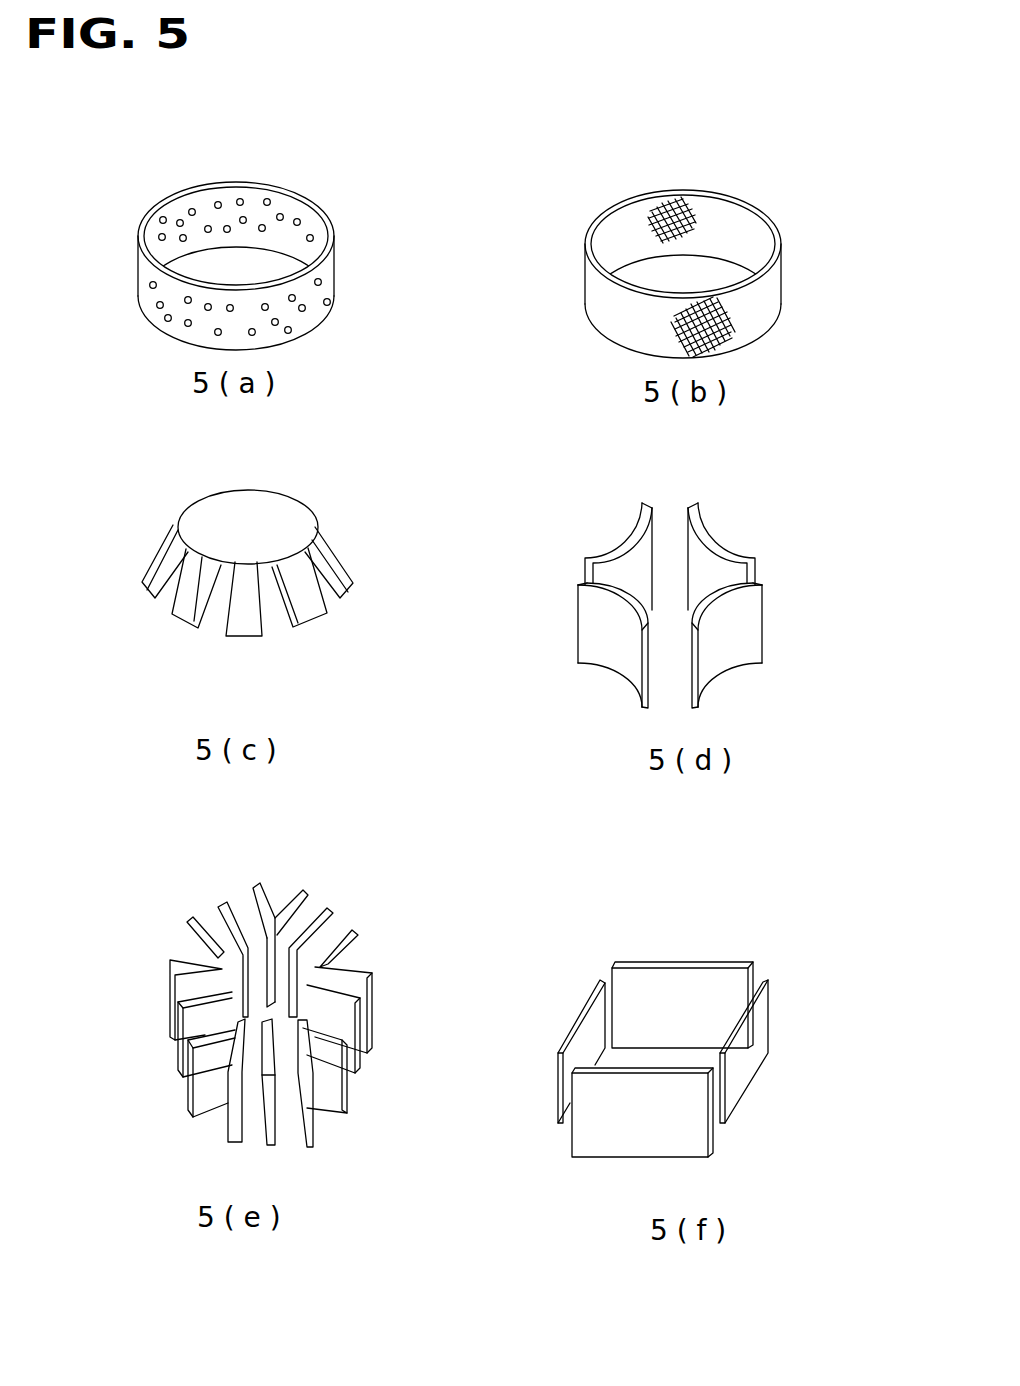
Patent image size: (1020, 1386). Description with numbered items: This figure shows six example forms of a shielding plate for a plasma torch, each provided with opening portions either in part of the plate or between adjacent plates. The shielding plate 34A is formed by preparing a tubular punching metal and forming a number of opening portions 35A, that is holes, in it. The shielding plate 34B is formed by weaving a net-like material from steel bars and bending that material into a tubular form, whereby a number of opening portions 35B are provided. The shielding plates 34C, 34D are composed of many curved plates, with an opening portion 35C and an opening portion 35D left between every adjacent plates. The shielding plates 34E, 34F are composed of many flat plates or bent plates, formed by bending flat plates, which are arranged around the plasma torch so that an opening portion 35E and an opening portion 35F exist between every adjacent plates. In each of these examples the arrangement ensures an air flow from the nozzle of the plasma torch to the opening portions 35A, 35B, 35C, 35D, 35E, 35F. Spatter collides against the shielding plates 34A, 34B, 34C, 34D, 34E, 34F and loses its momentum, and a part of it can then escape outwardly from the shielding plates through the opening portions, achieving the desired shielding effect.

The shielding plate 34A is at (281, 271).
The opening portions 35A is at (290, 330).
The shielding plate 34B is at (724, 295).
The opening portions 35B is at (725, 340).
The shielding plate 34C is at (281, 590).
The opening portion 35C is at (282, 625).
The shielding plate 34D is at (720, 598).
The opening portion 35D is at (672, 532).
The shielding plate 34E is at (316, 1040).
The opening portion 35E is at (250, 1127).
The shielding plate 34F is at (687, 1068).
The opening portion 35F is at (567, 1135).